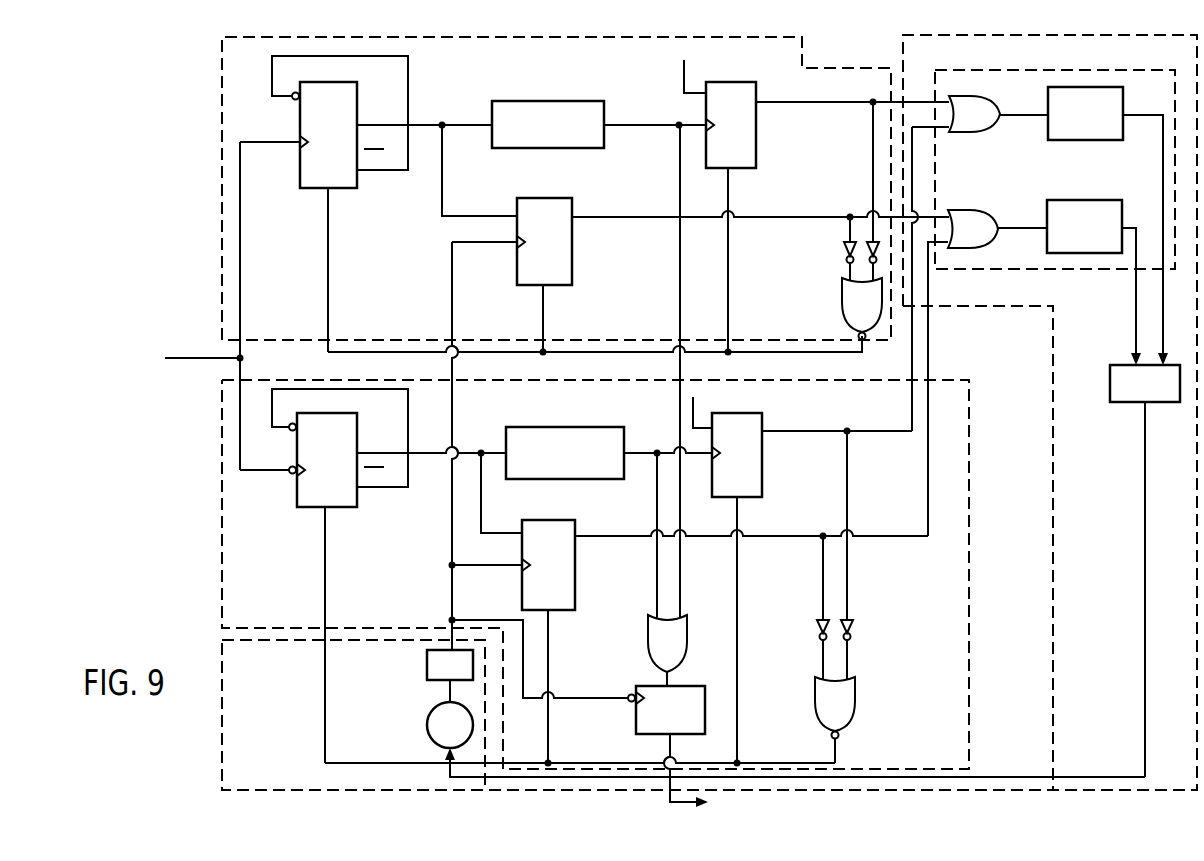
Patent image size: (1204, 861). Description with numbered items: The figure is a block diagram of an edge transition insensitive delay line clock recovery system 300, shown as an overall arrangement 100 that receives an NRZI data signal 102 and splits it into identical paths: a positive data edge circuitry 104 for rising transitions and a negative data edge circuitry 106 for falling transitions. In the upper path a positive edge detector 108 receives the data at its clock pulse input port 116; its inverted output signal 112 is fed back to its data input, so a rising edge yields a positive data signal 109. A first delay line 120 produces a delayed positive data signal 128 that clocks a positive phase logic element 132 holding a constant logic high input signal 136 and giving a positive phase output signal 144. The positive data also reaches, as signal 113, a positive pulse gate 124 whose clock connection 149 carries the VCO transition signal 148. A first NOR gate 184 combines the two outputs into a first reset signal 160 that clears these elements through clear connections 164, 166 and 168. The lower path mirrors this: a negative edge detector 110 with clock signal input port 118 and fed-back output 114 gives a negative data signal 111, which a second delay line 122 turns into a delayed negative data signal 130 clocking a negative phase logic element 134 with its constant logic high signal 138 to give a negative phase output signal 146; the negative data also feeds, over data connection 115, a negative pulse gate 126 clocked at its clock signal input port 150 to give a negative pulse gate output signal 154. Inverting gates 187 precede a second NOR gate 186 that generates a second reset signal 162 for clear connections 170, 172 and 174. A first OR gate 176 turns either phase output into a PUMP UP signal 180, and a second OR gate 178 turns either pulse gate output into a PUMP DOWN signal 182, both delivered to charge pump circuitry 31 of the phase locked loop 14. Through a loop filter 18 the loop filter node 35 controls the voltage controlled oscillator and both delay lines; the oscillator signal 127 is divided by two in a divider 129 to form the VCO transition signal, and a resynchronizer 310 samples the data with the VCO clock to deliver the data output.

The phase locked loop data synchronizer 100 is at (200, 476).
The data signal 102 is at (240, 229).
The positive data edge circuitry 104 is at (222, 62).
The negative data edge circuitry 106 is at (222, 606).
The positive edge detector logic element 108 is at (338, 82).
The positive edge detector output signal 109 is at (420, 125).
The negative edge detector logic element 110 is at (350, 413).
The negative edge detector output signal 111 is at (440, 453).
The inverted output signal 112 is at (272, 90).
The data port input signal 113 is at (517, 205).
The Q4 output signal 114 is at (272, 421).
The D5 input line 115 is at (522, 530).
The clock pulse input port 116 is at (300, 142).
The clock signal input port 118 is at (292, 478).
The first delay line 120 is at (548, 101).
The second delay line 122 is at (568, 427).
The positive pulse gate logic element 124 is at (548, 198).
The negative pulse gate 126 is at (547, 520).
The VCO signal 127 is at (440, 690).
The delayed positive data signal 128 is at (620, 125).
The divider 129 is at (427, 662).
The delayed negative data signal 130 is at (650, 454).
The positive edge phase logic element 132 is at (733, 82).
The negative edge phase comparator logic element 134 is at (740, 413).
The data port input signal 136 is at (684, 72).
The constant logic high signal 138 is at (693, 421).
The positive phase output signal 144 is at (833, 102).
The negative phase output signal 146 is at (785, 431).
The VCO transition signal 148 is at (452, 548).
The F2 clock input line 149 is at (517, 246).
The clock signal input port 150 is at (522, 568).
The negative pulse gate output signal 154 is at (612, 536).
The first reset signal 160 is at (328, 232).
The second reset signal 162 is at (572, 763).
The F1 clear input 164 is at (330, 190).
The F2 clear line 166 is at (550, 285).
The F3 clear line 168 is at (733, 168).
The F4 clear line 170 is at (333, 507).
The F5 clear line 172 is at (552, 612).
The F6 clear line 174 is at (742, 497).
The first logic OR gate 176 is at (978, 132).
The second logical OR gate 178 is at (962, 248).
The PUMP UP signal 180 is at (1082, 140).
The PUMP DOWN signal 182 is at (1070, 253).
The first reset circuitry element 184 is at (842, 294).
The second reset circuitry 186 is at (855, 696).
The inverting gates 187 is at (843, 250).
The low pass filter 18 is at (1110, 388).
The charge pump circuitry 31 is at (1065, 70).
The loop filter node 35 is at (1143, 548).
The phase locked loop 14 is at (222, 767).
The edge transition insensitive delay line clock recovery system 300 is at (200, 797).
The resynchronizer 310 is at (705, 712).